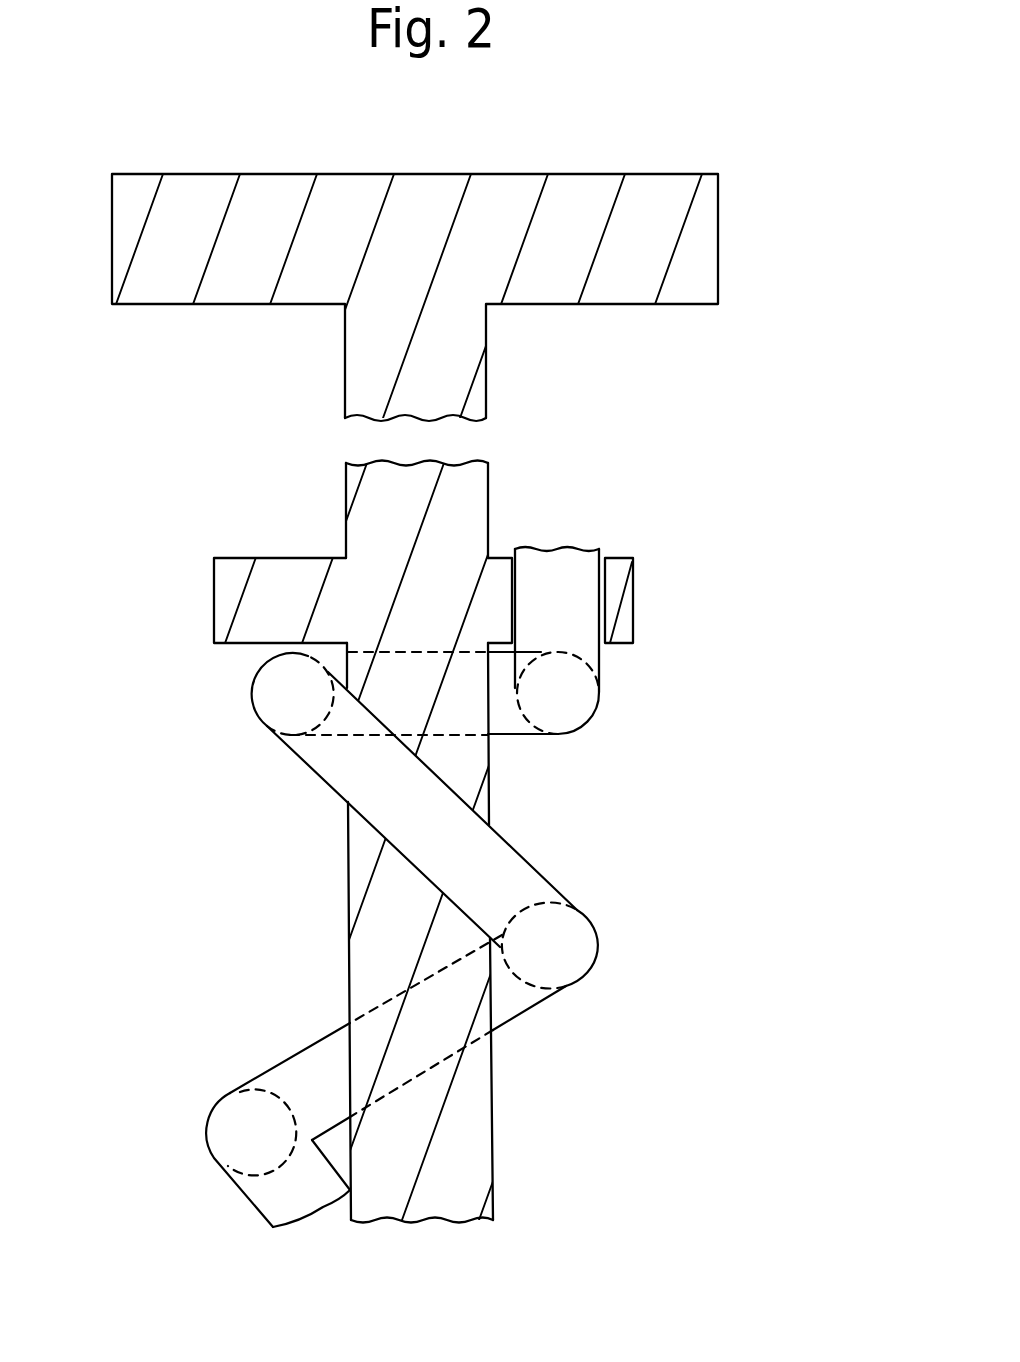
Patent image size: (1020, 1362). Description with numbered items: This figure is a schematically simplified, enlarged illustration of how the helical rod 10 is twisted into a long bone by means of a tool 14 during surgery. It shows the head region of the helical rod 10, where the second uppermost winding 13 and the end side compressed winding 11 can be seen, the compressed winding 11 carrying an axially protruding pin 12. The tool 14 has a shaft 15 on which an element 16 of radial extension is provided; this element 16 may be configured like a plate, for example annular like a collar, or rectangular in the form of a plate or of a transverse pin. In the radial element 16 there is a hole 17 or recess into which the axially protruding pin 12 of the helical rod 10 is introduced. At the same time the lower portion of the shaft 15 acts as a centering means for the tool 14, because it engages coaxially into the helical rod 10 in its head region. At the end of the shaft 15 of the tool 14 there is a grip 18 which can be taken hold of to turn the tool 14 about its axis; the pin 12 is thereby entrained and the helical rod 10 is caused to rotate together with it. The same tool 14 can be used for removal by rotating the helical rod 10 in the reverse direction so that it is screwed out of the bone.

The helical rod 10 is at (413, 939).
The end side compressed winding 11 is at (495, 712).
The axially protruding pin 12 is at (570, 622).
The second uppermost winding 13 is at (500, 883).
The tool 14 is at (318, 427).
The shaft 15 is at (384, 832).
The element 16 is at (253, 608).
The hole 17 is at (605, 558).
The grip 18 is at (433, 190).